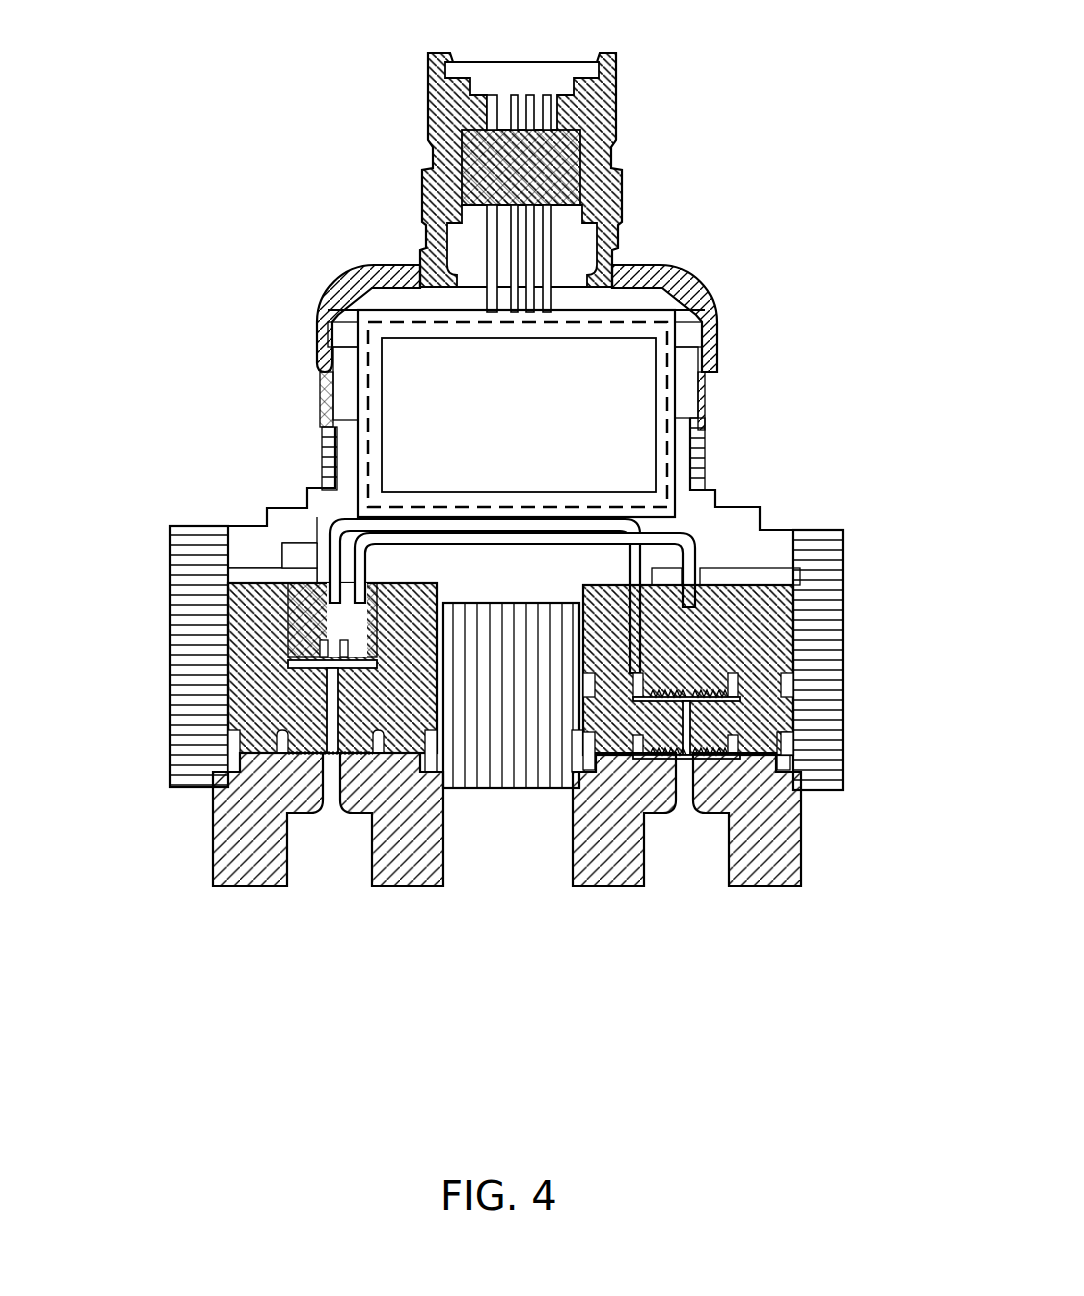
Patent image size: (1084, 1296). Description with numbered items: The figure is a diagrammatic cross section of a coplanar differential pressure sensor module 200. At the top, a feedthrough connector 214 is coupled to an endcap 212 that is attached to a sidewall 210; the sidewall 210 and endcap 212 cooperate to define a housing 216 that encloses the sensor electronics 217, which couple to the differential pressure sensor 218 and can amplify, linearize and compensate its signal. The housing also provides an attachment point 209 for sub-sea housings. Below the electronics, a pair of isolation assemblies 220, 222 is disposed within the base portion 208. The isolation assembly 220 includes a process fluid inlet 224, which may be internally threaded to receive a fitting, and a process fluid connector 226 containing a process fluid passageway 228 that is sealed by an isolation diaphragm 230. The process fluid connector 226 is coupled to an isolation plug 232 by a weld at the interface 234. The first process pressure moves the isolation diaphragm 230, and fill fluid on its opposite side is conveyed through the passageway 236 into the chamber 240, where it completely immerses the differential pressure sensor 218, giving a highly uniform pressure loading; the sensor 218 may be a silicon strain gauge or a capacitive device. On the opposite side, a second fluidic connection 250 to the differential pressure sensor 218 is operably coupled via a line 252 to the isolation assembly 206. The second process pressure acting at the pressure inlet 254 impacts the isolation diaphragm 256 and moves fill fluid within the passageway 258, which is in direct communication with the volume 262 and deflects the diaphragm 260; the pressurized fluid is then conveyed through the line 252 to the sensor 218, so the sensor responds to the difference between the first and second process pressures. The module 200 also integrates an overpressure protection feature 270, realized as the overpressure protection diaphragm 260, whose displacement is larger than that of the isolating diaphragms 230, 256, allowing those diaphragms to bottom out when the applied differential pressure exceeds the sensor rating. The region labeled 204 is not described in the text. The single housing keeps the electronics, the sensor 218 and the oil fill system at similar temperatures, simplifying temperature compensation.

The coplanar differential pressure sensor module 200 is at (138, 98).
The feedthrough connector 214 is at (615, 135).
The endcap 212 is at (690, 290).
The housing 216 is at (368, 378).
The sidewall 210 is at (703, 413).
The attachment point 209 is at (728, 507).
The sensor electronics 217 is at (517, 414).
The second fluidic connection 250 is at (282, 560).
The line 252 is at (646, 582).
The differential pressure sensor 218 is at (179, 590).
The chamber 240 is at (209, 617).
The isolation plug 232 is at (285, 661).
The passageway 236 is at (190, 703).
The base portion 208 is at (442, 658).
The isolation diaphragm 230 is at (416, 765).
The interface 234 is at (403, 798).
The isolation assembly 220 is at (263, 869).
The first pressure port 204 is at (147, 869).
The process fluid inlet 224 is at (303, 890).
The process fluid passageway 228 is at (356, 869).
The process fluid connector 226 is at (403, 886).
The isolation assembly 222 is at (767, 869).
The isolation assembly 206 is at (831, 879).
The pressure inlet 254 is at (663, 866).
The overpressure protection feature 270 is at (646, 716).
The isolation diaphragm 256 is at (797, 740).
The passageway 258 is at (822, 709).
The overpressure protection diaphragm 260 is at (797, 652).
The volume 262 is at (756, 765).